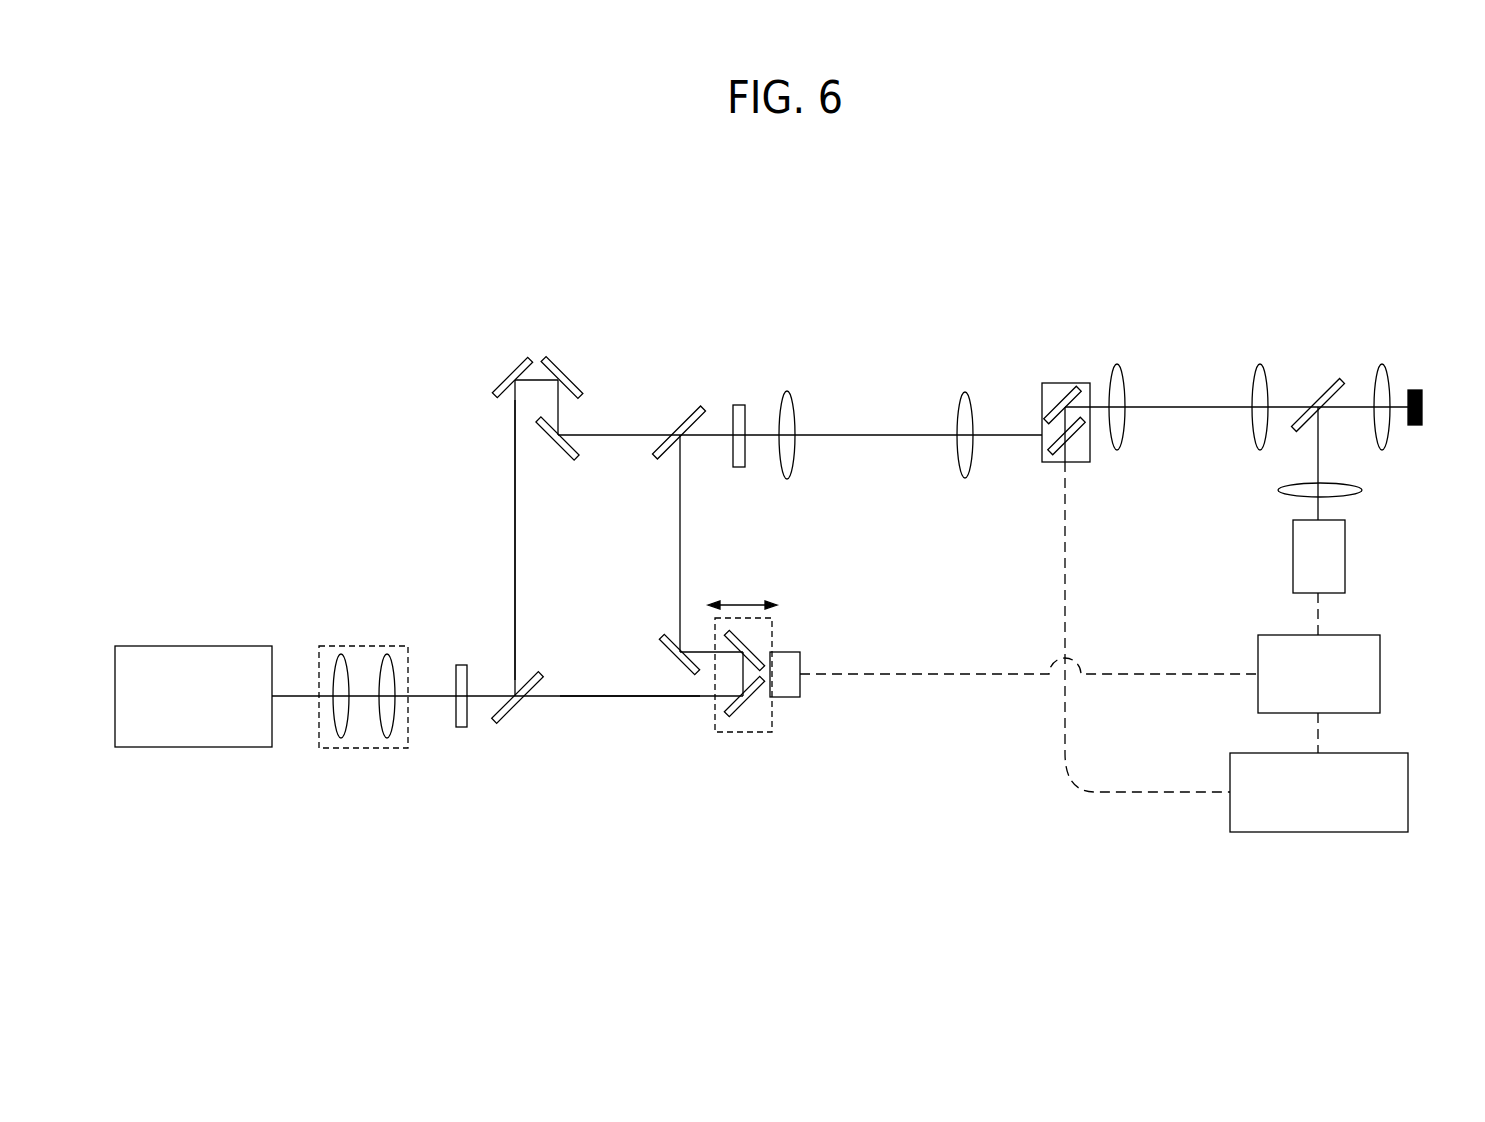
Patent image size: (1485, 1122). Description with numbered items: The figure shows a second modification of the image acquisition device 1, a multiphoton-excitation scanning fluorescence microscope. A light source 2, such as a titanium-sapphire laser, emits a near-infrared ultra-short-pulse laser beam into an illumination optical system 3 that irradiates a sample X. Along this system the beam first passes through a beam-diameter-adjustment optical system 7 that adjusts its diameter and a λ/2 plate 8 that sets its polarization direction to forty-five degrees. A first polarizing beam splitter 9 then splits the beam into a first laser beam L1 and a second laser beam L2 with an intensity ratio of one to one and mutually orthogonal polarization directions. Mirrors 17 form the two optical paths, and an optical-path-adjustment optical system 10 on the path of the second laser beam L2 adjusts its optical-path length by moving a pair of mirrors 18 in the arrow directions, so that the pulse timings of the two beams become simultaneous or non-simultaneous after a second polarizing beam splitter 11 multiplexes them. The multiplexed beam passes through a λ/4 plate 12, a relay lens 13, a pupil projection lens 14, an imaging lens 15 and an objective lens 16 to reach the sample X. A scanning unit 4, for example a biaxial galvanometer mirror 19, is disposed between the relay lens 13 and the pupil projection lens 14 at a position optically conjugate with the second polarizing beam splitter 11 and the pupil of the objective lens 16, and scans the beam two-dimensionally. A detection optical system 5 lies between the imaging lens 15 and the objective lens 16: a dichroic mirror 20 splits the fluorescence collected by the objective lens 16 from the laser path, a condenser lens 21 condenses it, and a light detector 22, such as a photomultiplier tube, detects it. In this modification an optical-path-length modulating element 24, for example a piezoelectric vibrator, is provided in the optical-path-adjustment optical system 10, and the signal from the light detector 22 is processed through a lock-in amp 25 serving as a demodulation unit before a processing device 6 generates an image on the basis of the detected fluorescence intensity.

The image acquisition device 1 is at (1308, 202).
The light source 2 is at (192, 646).
The illumination optical system 3 is at (877, 300).
The scanning unit 4 is at (1066, 383).
The detection optical system 5 is at (1392, 500).
The processing device 6 is at (1320, 832).
The beam-diameter-adjustment optical system 7 is at (362, 646).
The λ/2 plate 8 is at (461, 727).
The first polarizing beam splitter 9 is at (522, 702).
The optical-path-adjustment optical system 10 is at (742, 735).
The second polarizing beam splitter 11 is at (680, 418).
The λ/4 plate 12 is at (740, 405).
The relay lens 13 is at (787, 392).
The pupil projection lens 14 is at (1117, 365).
The imaging lens 15 is at (1260, 365).
The objective lens 16 is at (1383, 365).
The mirrors 17 is at (505, 368).
The pair of mirrors 18 is at (752, 645).
The biaxial galvanometer mirror 19 is at (1050, 405).
The dichroic mirror 20 is at (1320, 385).
The condenser lens 21 is at (1278, 490).
The light detector 22 is at (1293, 556).
The optical-path-length modulating element 24 is at (800, 686).
The lock-in amp 25 is at (1258, 650).
The first laser beam L1 is at (513, 528).
The second laser beam L2 is at (655, 700).
The sample X is at (1415, 390).